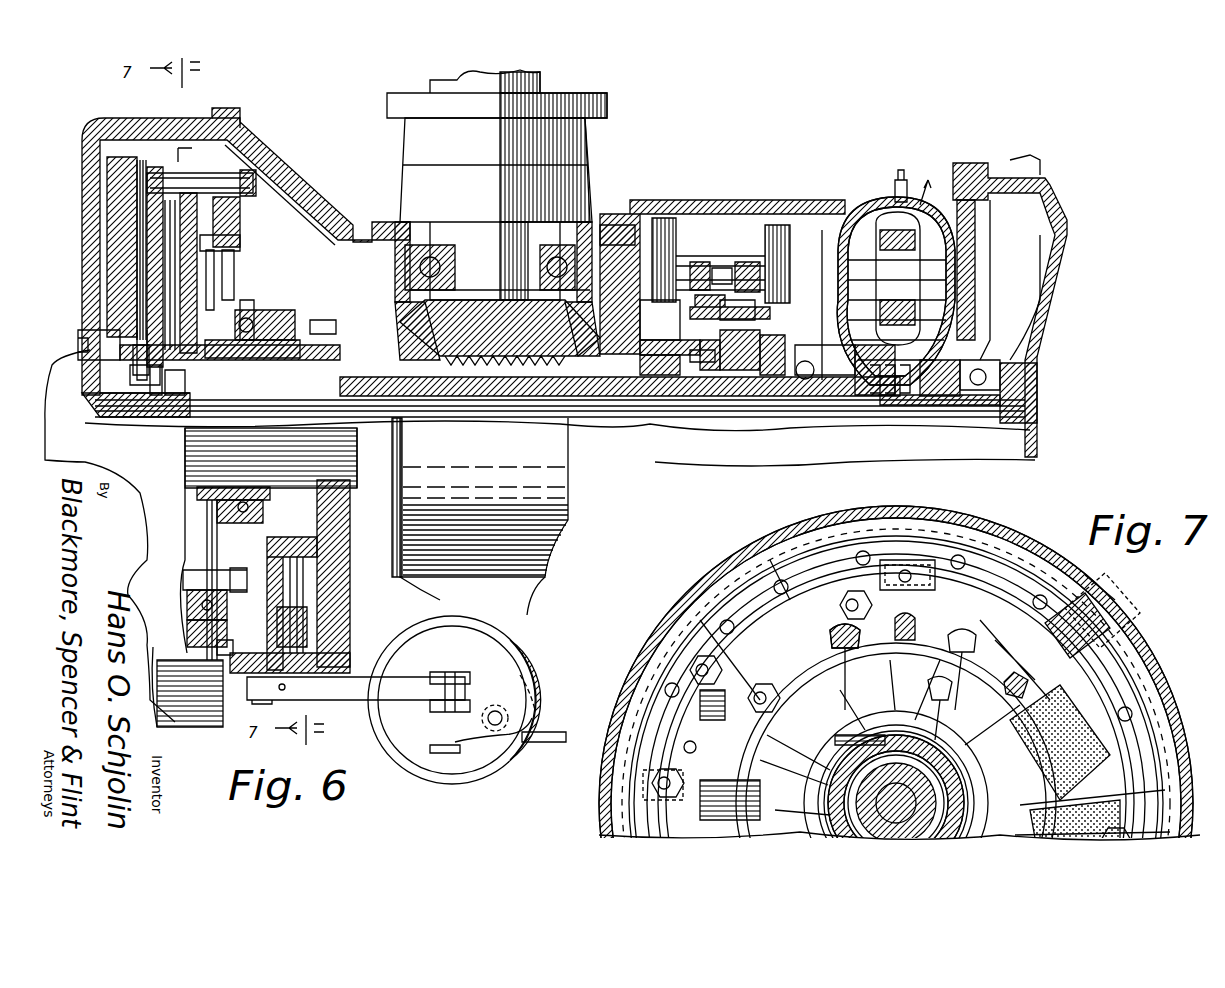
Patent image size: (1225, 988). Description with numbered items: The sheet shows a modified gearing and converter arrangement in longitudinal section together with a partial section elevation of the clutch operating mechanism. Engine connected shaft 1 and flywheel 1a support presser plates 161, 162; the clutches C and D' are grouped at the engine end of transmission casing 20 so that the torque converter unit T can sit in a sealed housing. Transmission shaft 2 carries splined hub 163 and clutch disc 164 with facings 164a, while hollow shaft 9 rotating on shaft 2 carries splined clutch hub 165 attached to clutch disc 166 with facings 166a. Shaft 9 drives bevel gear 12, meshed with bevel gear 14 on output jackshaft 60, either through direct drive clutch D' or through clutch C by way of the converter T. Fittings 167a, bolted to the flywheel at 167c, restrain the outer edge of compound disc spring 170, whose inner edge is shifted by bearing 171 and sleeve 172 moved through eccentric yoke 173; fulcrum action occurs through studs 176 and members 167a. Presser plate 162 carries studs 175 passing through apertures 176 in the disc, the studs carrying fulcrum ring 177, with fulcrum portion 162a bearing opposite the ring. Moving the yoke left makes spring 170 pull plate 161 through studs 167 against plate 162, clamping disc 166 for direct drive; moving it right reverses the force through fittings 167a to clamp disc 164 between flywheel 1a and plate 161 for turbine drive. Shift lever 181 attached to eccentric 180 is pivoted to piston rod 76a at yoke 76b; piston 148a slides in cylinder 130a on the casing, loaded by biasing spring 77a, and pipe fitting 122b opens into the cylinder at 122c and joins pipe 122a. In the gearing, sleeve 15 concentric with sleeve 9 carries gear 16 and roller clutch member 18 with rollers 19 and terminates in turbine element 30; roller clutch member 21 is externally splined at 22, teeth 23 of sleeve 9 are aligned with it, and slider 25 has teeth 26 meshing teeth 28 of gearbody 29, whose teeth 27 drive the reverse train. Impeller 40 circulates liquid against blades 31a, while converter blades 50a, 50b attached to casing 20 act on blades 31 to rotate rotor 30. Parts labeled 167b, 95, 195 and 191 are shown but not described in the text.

In FIG. 6, the engine connected shaft 1 is at (88, 330).
In FIG. 6, the flywheel 1a is at (108, 172).
In FIG. 7, the flywheel 1a is at (668, 630).
In FIG. 6, the clutch C is at (140, 200).
In FIG. 6, the facings 164a is at (135, 222).
In FIG. 7, the facings 164a is at (1115, 810).
In FIG. 6, the clutch disc 164 is at (130, 248).
In FIG. 7, the clutch disc 164 is at (1040, 818).
In FIG. 6, the presser plate 161 is at (158, 175).
In FIG. 7, the presser plate 161 is at (1160, 668).
In FIG. 6, the studs 167 is at (150, 172).
In FIG. 7, the studs 167 is at (738, 620).
In FIG. 6, the boss 167b is at (238, 128).
In FIG. 7, the boss 167b is at (1075, 625).
In FIG. 6, the fittings 167a is at (228, 160).
In FIG. 7, the fittings 167a is at (783, 582).
In FIG. 7, the bolt attachment 167c is at (760, 592).
In FIG. 6, the direct drive clutch D' is at (195, 171).
In FIG. 6, the presser plate 162 is at (242, 215).
In FIG. 6, the fulcrum portion 162a is at (198, 612).
In FIG. 6, the apertures 176 is at (240, 240).
In FIG. 7, the apertures 176 is at (895, 625).
In FIG. 6, the studs 175 is at (215, 262).
In FIG. 7, the studs 175 is at (910, 640).
In FIG. 6, the facings 166a is at (236, 272).
In FIG. 7, the facings 166a is at (1035, 730).
In FIG. 6, the clutch disc 166 is at (250, 300).
In FIG. 6, the compound disc spring 170 is at (255, 320).
In FIG. 7, the compound disc spring 170 is at (978, 600).
In FIG. 6, the splined hub 163 is at (135, 405).
In FIG. 6, the splined clutch hub 165 is at (172, 400).
In FIG. 6, the output jackshaft 60 is at (488, 232).
In FIG. 6, the bevel gear 14 is at (470, 375).
In FIG. 6, the bevel gear 12 is at (428, 380).
In FIG. 6, the hollow shaft 9 is at (515, 400).
In FIG. 7, the hollow shaft 9 is at (930, 775).
In FIG. 6, the transmission shaft 2 is at (560, 410).
In FIG. 7, the transmission shaft 2 is at (915, 795).
In FIG. 6, the casing 20 is at (638, 222).
In FIG. 6, the teeth 23 is at (660, 335).
In FIG. 6, the teeth 28 is at (660, 232).
In FIG. 6, the teeth 27 is at (775, 238).
In FIG. 6, the gearbody 29 is at (688, 258).
In FIG. 6, the teeth 26 is at (700, 272).
In FIG. 6, the spacer 95 is at (722, 272).
In FIG. 6, the external splines 22 is at (748, 270).
In FIG. 6, the slider 25 is at (700, 312).
In FIG. 6, the roller clutch member 21 is at (740, 318).
In FIG. 6, the sleeve 15 is at (668, 395).
In FIG. 6, the rollers 19 is at (712, 398).
In FIG. 6, the roller clutch member 18 is at (735, 395).
In FIG. 6, the gear 16 is at (776, 396).
In FIG. 6, the turbine element 30 is at (860, 405).
In FIG. 6, the spring 195 is at (880, 400).
In FIG. 6, the impeller 40 is at (925, 405).
In FIG. 6, the blades 31 is at (868, 262).
In FIG. 6, the blades 31a is at (918, 255).
In FIG. 6, the converter blades 50b is at (862, 220).
In FIG. 6, the converter blades 50a is at (902, 188).
In FIG. 6, the torque converter unit T is at (927, 181).
In FIG. 6, the housing wall 191 is at (1032, 352).
In FIG. 6, the sleeve 172 is at (205, 495).
In FIG. 6, the bearing 171 is at (230, 512).
In FIG. 6, the eccentric yoke 173 is at (322, 560).
In FIG. 6, the eccentric 180 is at (300, 590).
In FIG. 6, the fulcrum ring 177 is at (200, 625).
In FIG. 6, the shift lever 181 is at (355, 672).
In FIG. 6, the cylinder 130a is at (518, 666).
In FIG. 6, the piston rod 76a is at (462, 678).
In FIG. 6, the yoke 76b is at (440, 706).
In FIG. 6, the pipe fitting 122b is at (528, 685).
In FIG. 6, the pipe 122a is at (550, 725).
In FIG. 6, the cylinder opening 122c is at (505, 725).
In FIG. 6, the piston 148a is at (488, 738).
In FIG. 6, the biasing spring 77a is at (440, 755).